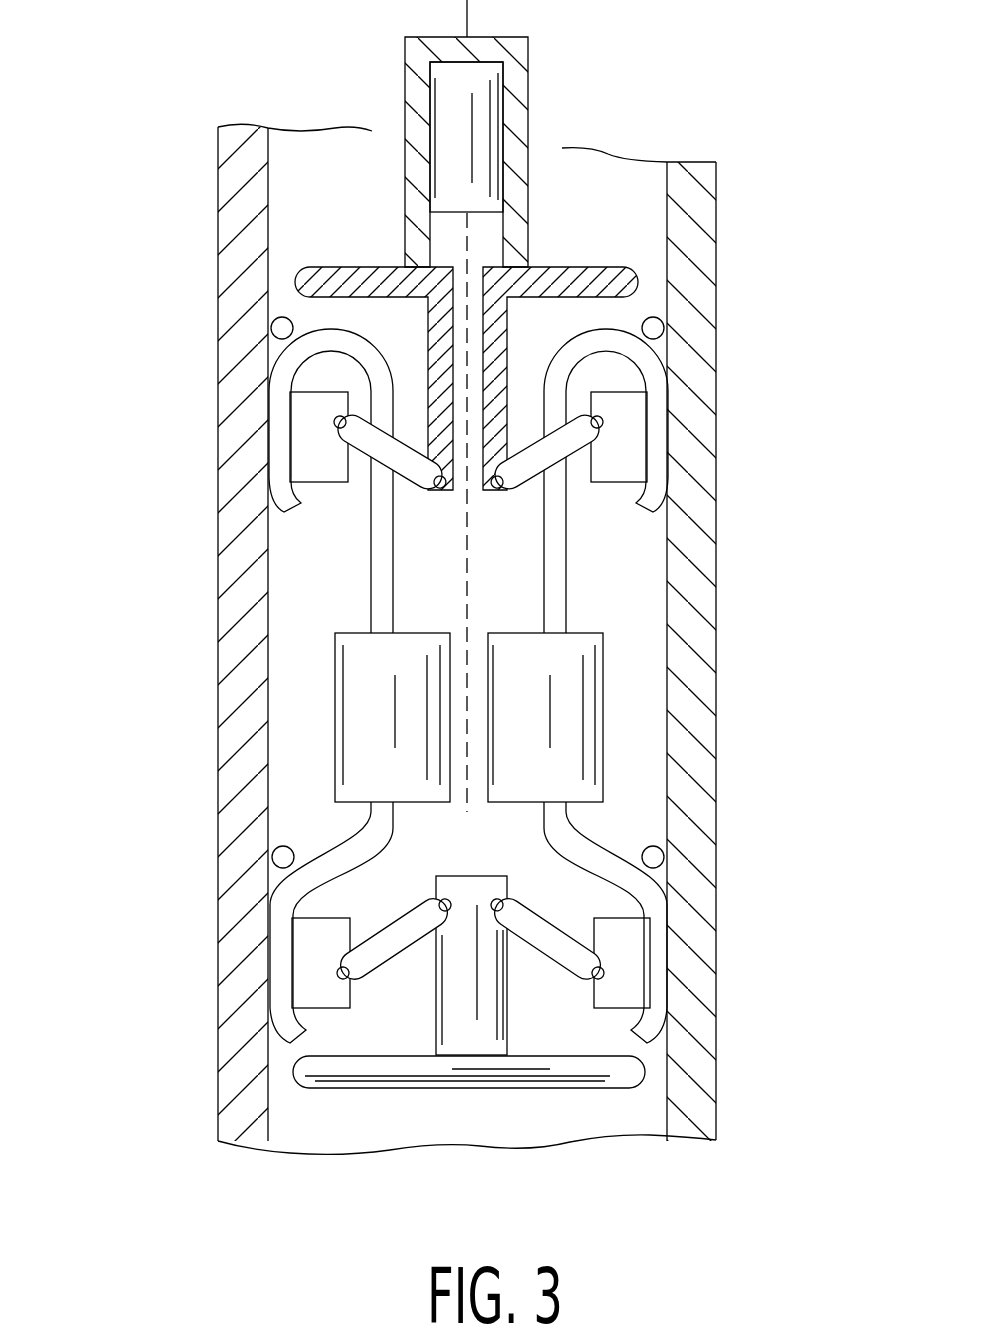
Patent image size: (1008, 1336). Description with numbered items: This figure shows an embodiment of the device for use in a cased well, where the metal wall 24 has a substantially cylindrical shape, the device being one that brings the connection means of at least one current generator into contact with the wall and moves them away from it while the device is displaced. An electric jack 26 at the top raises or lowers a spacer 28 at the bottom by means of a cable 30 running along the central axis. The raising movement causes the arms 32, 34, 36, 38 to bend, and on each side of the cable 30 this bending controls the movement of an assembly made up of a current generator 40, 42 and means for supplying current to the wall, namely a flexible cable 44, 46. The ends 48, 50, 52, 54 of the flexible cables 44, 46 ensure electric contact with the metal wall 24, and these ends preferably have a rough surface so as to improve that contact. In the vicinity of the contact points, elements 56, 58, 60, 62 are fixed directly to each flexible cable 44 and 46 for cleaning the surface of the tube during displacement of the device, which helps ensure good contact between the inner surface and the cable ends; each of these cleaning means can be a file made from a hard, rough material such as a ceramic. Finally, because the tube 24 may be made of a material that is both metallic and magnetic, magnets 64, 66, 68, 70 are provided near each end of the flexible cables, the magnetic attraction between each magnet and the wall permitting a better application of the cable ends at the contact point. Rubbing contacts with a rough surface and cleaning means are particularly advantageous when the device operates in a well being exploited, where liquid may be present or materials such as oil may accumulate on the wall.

The metal wall 24 is at (697, 237).
The electric jack 26 is at (443, 82).
The spacer 28 is at (325, 1080).
The cable 30 is at (468, 810).
The arm 32 is at (427, 492).
The arm 34 is at (518, 486).
The arm 36 is at (388, 953).
The arm 38 is at (556, 950).
The current generator 40 is at (343, 707).
The current generator 42 is at (592, 697).
The flexible cable 44 is at (382, 530).
The flexible cable 46 is at (563, 558).
The end of flexible cable 48 is at (280, 373).
The end of flexible cable 50 is at (280, 930).
The end of flexible cable 52 is at (660, 470).
The end of flexible cable 54 is at (660, 925).
The cleaning element 56 is at (275, 325).
The cleaning element 58 is at (278, 853).
The cleaning element 60 is at (660, 328).
The cleaning element 62 is at (660, 853).
The magnet 64 is at (300, 456).
The magnet 66 is at (312, 985).
The magnet 68 is at (635, 415).
The magnet 70 is at (632, 985).